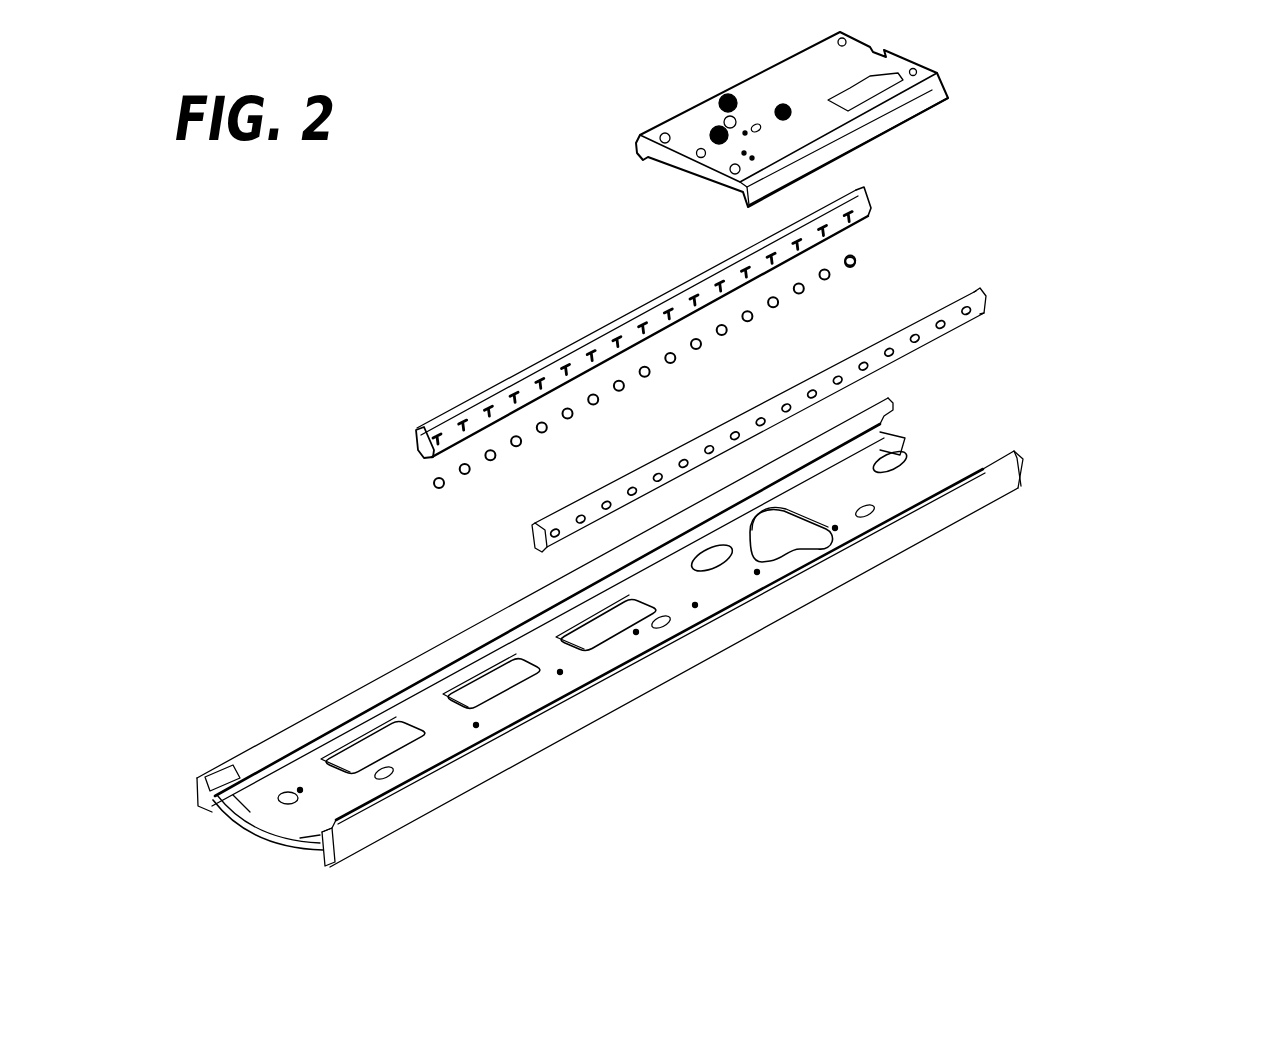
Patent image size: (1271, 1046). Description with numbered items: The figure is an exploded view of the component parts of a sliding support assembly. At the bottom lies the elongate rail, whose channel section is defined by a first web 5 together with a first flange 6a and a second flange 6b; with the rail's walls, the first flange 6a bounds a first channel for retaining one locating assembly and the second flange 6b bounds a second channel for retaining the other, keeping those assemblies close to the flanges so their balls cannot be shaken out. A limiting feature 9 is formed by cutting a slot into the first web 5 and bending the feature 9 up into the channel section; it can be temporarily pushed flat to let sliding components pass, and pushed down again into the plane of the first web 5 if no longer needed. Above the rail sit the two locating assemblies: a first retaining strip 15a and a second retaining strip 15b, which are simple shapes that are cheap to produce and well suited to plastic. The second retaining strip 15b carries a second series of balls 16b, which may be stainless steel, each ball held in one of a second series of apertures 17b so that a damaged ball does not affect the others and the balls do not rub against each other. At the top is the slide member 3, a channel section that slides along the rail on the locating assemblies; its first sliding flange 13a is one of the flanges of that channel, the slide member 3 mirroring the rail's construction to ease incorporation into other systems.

The slide member 3 is at (931, 91).
The first web 5 is at (612, 640).
The first flange 6a is at (732, 628).
The second flange 6b is at (490, 620).
The limiting feature 9 is at (635, 605).
The first sliding flange 13a is at (796, 190).
The first retaining strip 15a is at (982, 293).
The second retaining strip 15b is at (870, 198).
The second series of balls 16b is at (857, 262).
The second series of apertures 17b is at (645, 322).